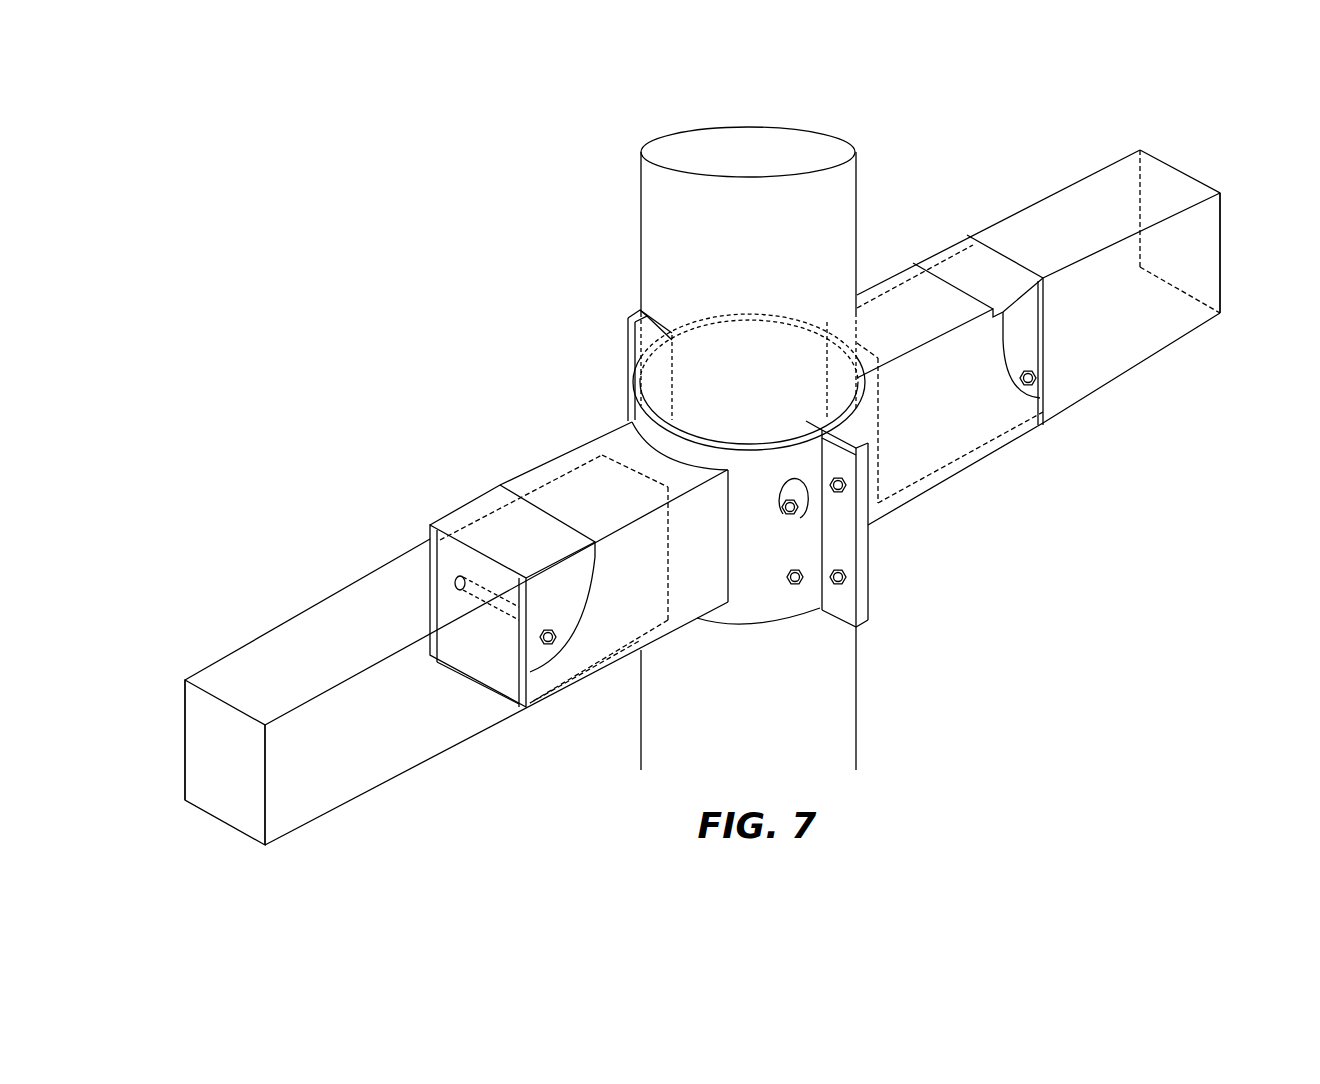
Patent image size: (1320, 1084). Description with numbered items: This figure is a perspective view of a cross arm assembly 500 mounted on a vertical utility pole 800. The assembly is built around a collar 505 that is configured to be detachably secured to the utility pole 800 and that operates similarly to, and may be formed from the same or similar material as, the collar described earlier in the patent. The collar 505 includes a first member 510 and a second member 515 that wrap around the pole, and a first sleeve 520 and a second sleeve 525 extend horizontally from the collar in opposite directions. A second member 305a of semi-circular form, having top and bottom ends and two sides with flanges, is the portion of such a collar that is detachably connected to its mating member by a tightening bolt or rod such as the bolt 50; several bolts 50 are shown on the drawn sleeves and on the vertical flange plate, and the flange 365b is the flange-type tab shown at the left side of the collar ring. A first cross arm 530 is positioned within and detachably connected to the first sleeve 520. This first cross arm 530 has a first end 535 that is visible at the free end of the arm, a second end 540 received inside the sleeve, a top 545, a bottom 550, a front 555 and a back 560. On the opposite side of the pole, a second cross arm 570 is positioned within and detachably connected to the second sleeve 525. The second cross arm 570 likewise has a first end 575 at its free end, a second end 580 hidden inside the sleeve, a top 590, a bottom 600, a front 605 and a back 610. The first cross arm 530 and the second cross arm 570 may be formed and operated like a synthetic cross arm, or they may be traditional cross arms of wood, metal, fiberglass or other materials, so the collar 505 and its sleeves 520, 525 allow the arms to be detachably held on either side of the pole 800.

The cross arm assembly 500 is at (359, 388).
The collar 505 is at (564, 418).
The first member 510 is at (726, 537).
The second member 515 is at (749, 354).
The first sleeve 520 is at (572, 575).
The second sleeve 525 is at (978, 370).
The first cross arm 530 is at (419, 669).
The first end 535 is at (197, 762).
The second end 540 is at (622, 603).
The top 545 is at (292, 609).
The bottom 550 is at (467, 743).
The front 555 is at (319, 793).
The back 560 is at (148, 740).
The second cross arm 570 is at (1080, 317).
The first end 575 is at (1252, 253).
The second end 580 is at (950, 374).
The top 590 is at (1042, 211).
The bottom 600 is at (1175, 243).
The front 605 is at (1044, 419).
The back 610 is at (1159, 211).
The vertical utility pole 800 is at (778, 448).
The mounting tab 365b is at (613, 352).
The second member 305a is at (890, 524).
The bolt 50 is at (788, 511).